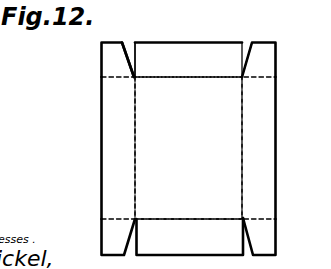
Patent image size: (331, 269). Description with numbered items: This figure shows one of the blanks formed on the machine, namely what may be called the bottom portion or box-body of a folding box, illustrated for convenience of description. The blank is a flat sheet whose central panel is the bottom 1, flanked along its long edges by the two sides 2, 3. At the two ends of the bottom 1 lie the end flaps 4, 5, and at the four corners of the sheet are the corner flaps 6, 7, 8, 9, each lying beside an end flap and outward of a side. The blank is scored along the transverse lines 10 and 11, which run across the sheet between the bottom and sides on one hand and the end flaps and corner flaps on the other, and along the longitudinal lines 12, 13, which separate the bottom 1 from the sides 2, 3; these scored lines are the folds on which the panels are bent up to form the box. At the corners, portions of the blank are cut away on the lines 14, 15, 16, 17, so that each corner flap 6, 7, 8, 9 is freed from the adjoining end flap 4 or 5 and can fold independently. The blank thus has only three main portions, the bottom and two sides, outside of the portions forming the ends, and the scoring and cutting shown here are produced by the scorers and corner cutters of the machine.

The bottom 1 is at (188, 148).
The side 2 is at (112, 148).
The side 3 is at (266, 148).
The end flap 4 is at (188, 56).
The end flap 5 is at (190, 236).
The corner flap 6 is at (118, 60).
The corner flap 7 is at (259, 60).
The corner flap 8 is at (119, 237).
The corner flap 9 is at (259, 236).
The scoring line 10 is at (191, 77).
The scoring line 11 is at (185, 219).
The scoring line 12 is at (136, 150).
The scoring line 13 is at (242, 148).
The cutting line 14 is at (129, 44).
The cutting line 15 is at (137, 60).
The cutting line 16 is at (233, 60).
The cutting line 17 is at (251, 45).